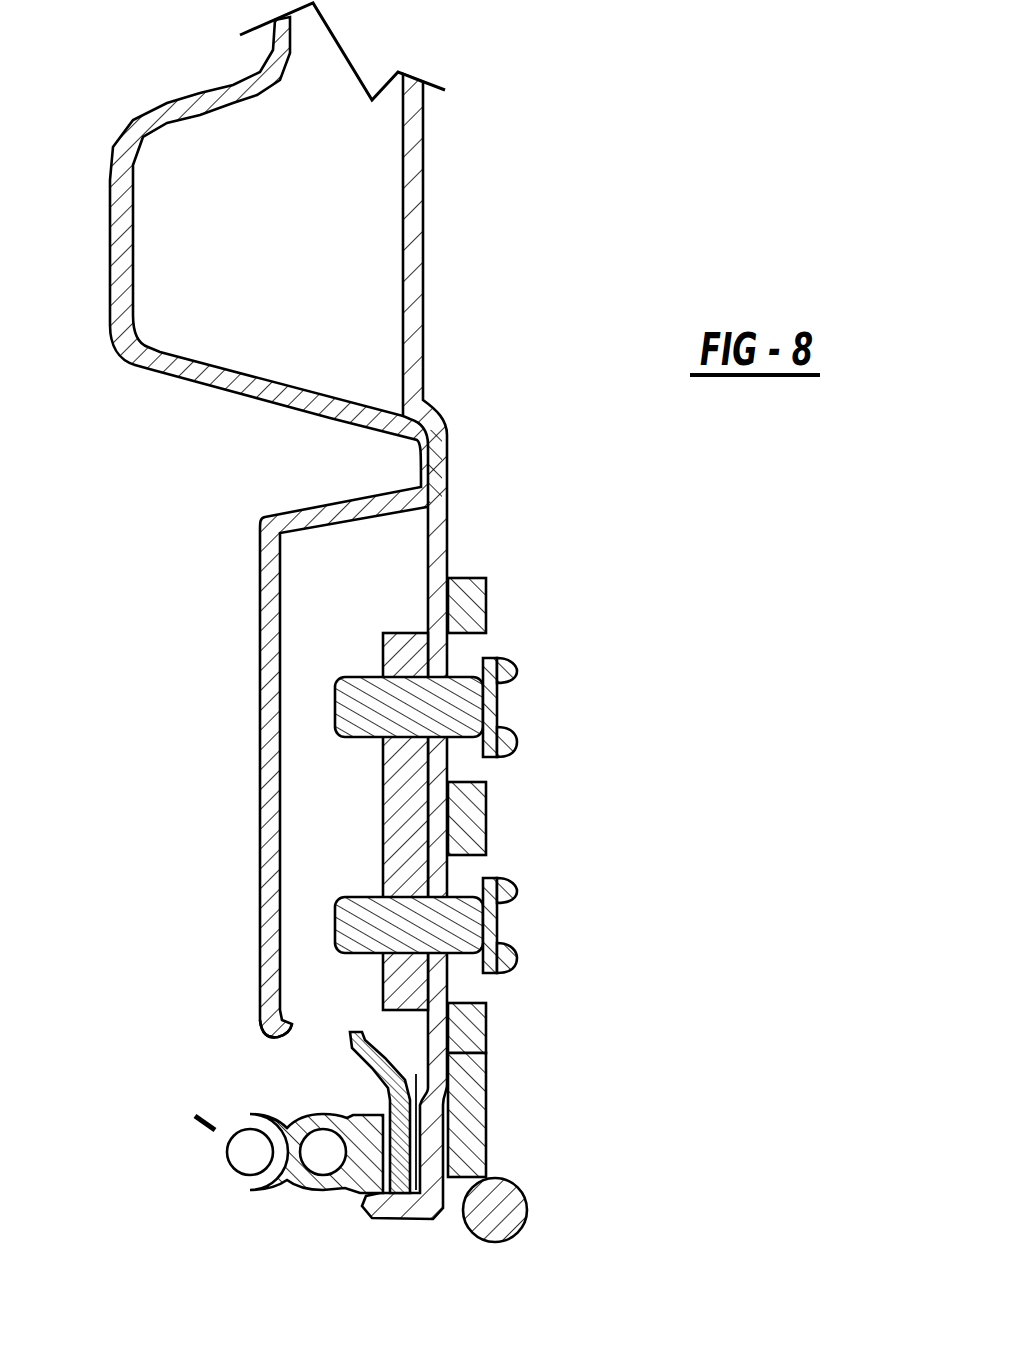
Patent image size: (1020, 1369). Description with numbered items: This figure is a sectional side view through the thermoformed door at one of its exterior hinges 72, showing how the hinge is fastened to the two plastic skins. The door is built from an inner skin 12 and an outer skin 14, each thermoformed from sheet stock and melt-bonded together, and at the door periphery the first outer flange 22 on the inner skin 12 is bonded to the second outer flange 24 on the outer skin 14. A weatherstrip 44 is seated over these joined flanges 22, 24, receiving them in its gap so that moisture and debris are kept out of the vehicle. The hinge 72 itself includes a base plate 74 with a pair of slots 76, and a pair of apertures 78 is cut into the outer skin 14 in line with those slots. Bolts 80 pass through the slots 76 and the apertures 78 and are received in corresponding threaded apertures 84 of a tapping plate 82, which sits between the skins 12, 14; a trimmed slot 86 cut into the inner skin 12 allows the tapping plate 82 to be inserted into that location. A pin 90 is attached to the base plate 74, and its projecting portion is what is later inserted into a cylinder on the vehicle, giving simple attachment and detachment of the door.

The inner skin 12 is at (260, 572).
The outer skin 14 is at (437, 527).
The first outer flange 22 is at (397, 1110).
The second outer flange 24 is at (487, 1155).
The weatherstrip 44 is at (308, 1192).
The exterior hinge 72 is at (565, 1086).
The base plate 74 is at (480, 820).
The slot 76 is at (487, 648).
The aperture 78 is at (490, 697).
The bolt 80 is at (497, 737).
The tapping plate 82 is at (403, 842).
The threaded aperture 84 is at (400, 737).
The trimmed slot 86 is at (293, 1028).
The pin 90 is at (527, 1212).